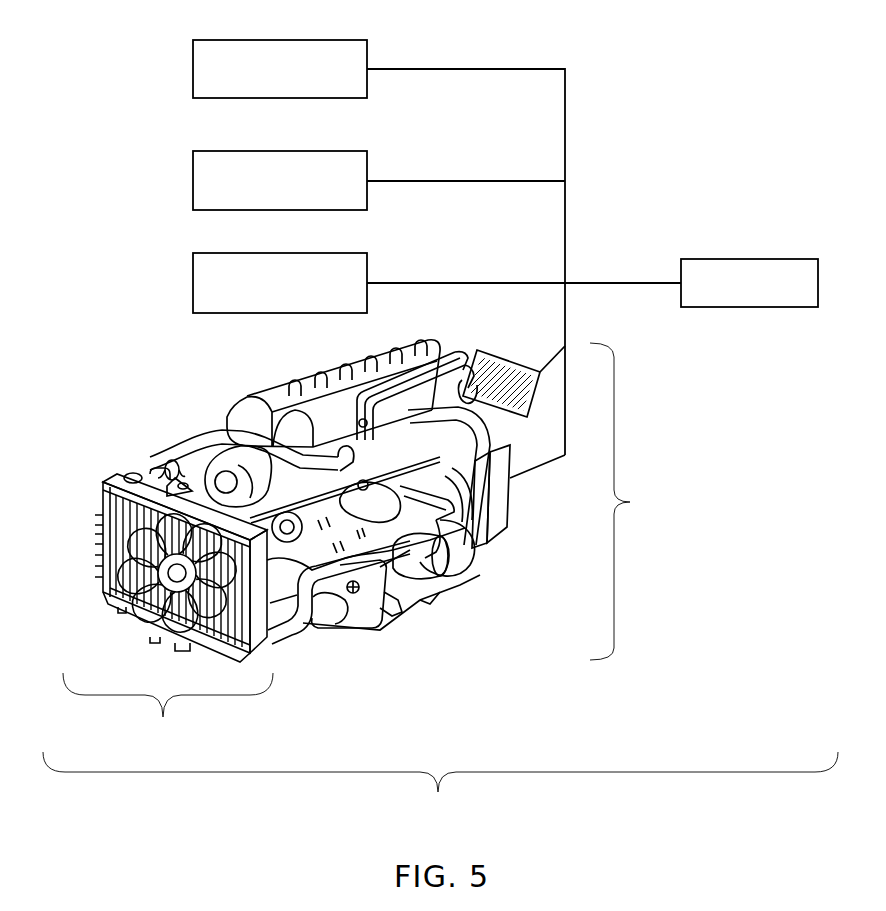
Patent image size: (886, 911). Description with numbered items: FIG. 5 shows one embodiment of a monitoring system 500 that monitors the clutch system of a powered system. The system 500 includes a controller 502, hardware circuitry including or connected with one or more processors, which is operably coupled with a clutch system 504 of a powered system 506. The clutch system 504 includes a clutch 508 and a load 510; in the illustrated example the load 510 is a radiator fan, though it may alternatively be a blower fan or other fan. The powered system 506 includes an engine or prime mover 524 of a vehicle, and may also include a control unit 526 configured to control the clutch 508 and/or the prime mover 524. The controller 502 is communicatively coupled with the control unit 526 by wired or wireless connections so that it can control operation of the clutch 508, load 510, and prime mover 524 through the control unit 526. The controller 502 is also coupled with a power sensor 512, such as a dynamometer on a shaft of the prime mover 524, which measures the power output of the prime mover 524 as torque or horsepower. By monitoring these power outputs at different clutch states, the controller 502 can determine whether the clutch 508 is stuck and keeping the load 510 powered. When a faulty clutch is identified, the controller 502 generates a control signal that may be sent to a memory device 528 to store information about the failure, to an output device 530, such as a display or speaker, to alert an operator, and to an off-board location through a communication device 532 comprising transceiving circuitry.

The monitoring system 500 is at (438, 416).
The controller 502 is at (768, 258).
The clutch system 504 is at (316, 526).
The powered system 506 is at (505, 336).
The clutch 508 is at (167, 576).
The load 510 is at (125, 540).
The power sensor 512 is at (500, 518).
The engine or prime mover 524 is at (398, 582).
The control unit 526 is at (490, 350).
The memory device 528 is at (368, 269).
The output device 530 is at (368, 166).
The communication device 532 is at (368, 54).